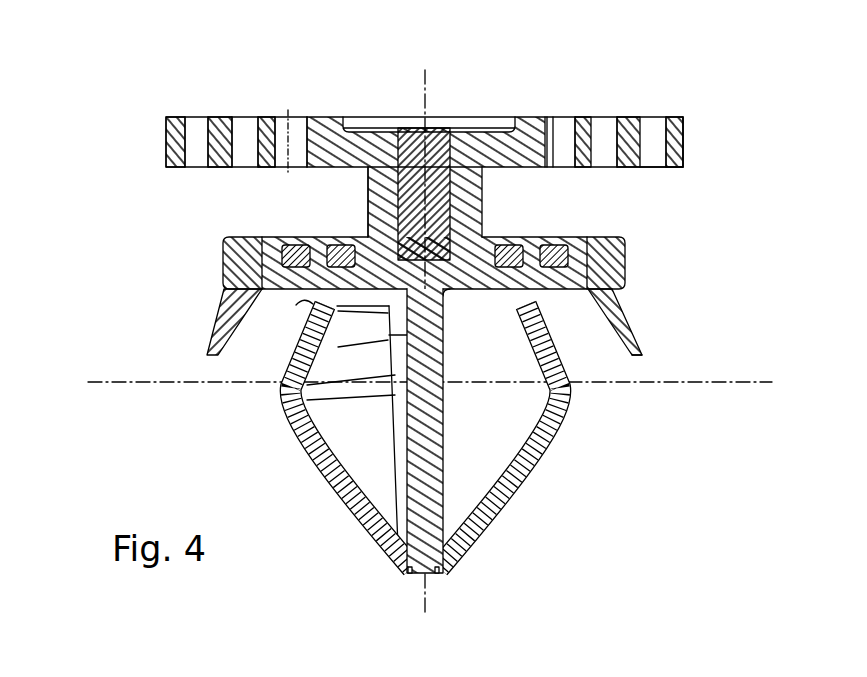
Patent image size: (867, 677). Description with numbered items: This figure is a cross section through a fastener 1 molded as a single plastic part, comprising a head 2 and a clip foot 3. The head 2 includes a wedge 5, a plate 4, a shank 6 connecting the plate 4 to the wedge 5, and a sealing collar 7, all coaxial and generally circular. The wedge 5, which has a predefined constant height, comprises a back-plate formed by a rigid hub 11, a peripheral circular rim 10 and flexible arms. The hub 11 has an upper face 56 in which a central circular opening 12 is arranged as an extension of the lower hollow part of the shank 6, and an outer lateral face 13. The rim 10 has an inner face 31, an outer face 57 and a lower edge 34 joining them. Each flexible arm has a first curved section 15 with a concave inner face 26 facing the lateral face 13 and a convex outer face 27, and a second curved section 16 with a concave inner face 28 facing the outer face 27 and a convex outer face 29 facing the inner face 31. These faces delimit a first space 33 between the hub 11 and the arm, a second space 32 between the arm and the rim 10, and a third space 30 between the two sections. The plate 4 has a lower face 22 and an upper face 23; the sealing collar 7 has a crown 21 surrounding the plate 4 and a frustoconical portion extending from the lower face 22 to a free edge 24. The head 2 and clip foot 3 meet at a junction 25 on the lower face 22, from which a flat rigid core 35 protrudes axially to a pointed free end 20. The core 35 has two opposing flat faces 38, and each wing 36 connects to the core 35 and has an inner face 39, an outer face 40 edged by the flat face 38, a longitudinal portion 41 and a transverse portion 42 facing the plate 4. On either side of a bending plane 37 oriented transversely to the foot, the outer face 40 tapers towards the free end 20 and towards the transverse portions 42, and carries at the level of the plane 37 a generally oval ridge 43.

The fastener 1 is at (80, 131).
The head 2 is at (156, 208).
The clip foot 3 is at (156, 493).
The plate 4 is at (590, 203).
The wedge 5 is at (678, 117).
The shank 6 is at (370, 200).
The sealing collar 7 is at (625, 325).
The peripheral circular rim 10 is at (671, 138).
The back-plate (rigid hub) 11 is at (360, 148).
The central circular opening 12 is at (436, 138).
The outer lateral face 13 is at (550, 116).
The first curved section 15 is at (257, 168).
The second curved section 16 is at (208, 168).
The pointed free end 20 is at (414, 575).
The crown 21 is at (626, 265).
The lower face 22 is at (588, 290).
The upper face 23 is at (520, 245).
The free edge 24 is at (636, 358).
The junction 25 is at (446, 291).
The concave inner face 26 is at (573, 156).
The convex outer face 27 is at (594, 135).
The concave inner face 28 is at (616, 156).
The convex outer face 29 is at (645, 135).
The third space 30 is at (244, 126).
The inner face 31 is at (666, 156).
The second space 32 is at (202, 126).
The first space 33 is at (298, 126).
The lower edge 34 is at (673, 168).
The rigid core 35 is at (448, 400).
The wing 36 is at (415, 436).
The bending plane 37 is at (122, 382).
The flat face 38 is at (404, 476).
The inner face 39 is at (322, 435).
The outer face 40 is at (314, 460).
The longitudinal portion 41 is at (305, 340).
The transverse portion 42 is at (306, 300).
The ridge 43 is at (285, 393).
The upper face 56 is at (513, 121).
The outer face 57 is at (684, 160).